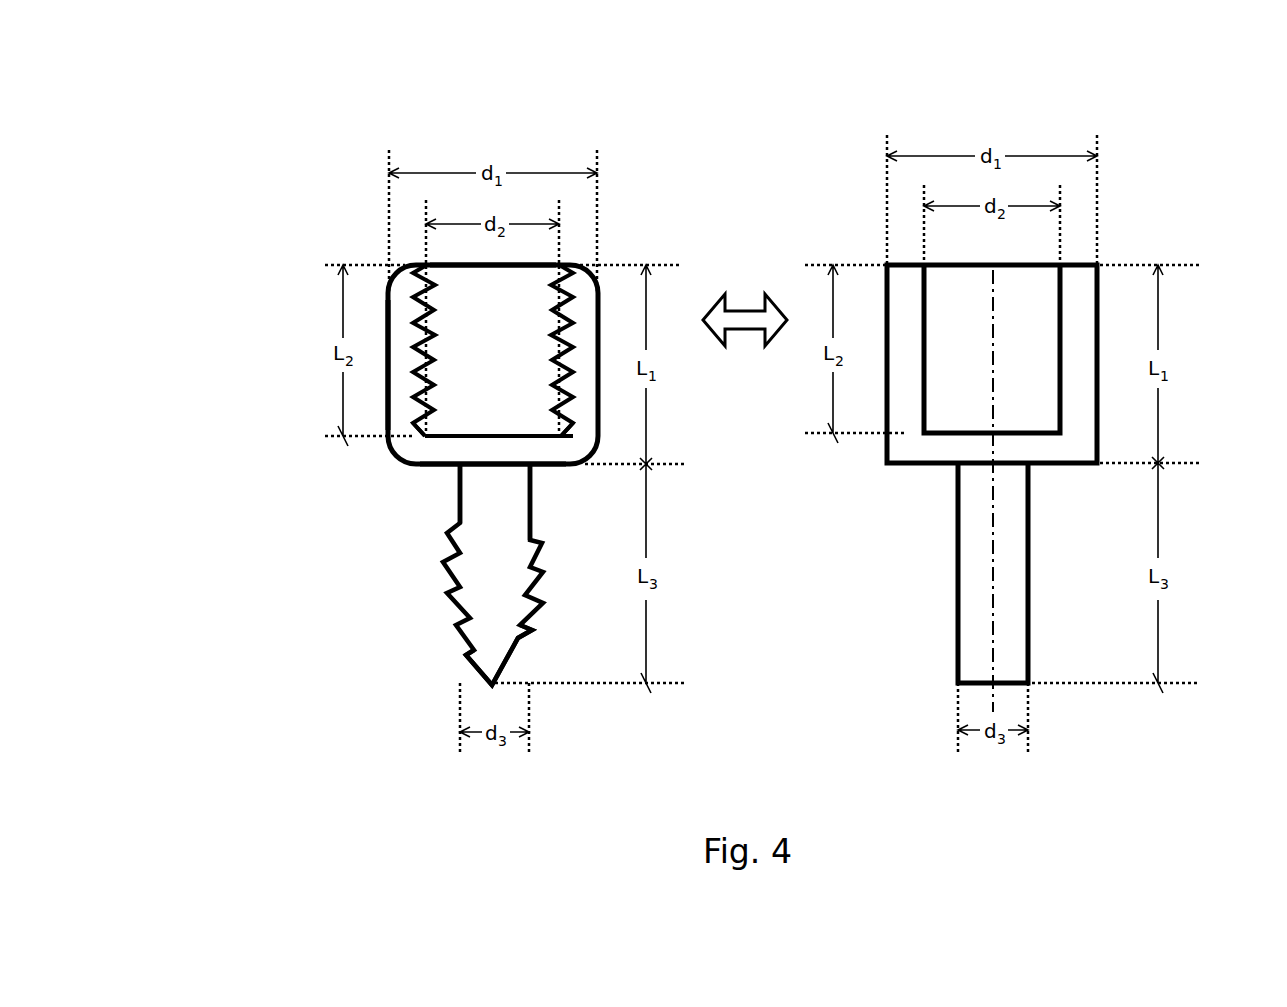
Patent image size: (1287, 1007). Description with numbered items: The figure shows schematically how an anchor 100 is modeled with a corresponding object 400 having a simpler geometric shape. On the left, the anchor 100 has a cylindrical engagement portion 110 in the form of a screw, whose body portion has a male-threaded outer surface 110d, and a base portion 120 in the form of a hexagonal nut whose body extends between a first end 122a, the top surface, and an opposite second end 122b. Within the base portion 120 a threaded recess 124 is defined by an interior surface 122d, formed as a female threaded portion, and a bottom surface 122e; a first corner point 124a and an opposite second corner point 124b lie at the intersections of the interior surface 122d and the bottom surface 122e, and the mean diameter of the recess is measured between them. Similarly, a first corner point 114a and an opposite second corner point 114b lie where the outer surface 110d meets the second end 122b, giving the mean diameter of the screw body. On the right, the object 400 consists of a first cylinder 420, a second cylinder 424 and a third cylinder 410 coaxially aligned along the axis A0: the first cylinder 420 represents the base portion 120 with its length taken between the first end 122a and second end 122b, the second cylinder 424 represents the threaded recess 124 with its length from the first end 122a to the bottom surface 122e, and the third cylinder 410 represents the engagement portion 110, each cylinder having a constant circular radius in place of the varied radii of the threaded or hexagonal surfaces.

The anchor 100 is at (580, 91).
The cylindrical engagement portion 110 is at (448, 573).
The outer surface 110d is at (530, 518).
The first corner point 114a is at (458, 466).
The second corner point 114b is at (532, 467).
The base portion 120 is at (388, 402).
The first end 122a is at (571, 268).
The second end 122b is at (566, 460).
The interior surface 122d is at (436, 312).
The bottom surface 122e is at (520, 434).
The threaded recess 124 is at (505, 295).
The first corner point 124a is at (420, 437).
The second corner point 124b is at (535, 466).
The object 400 is at (1052, 79).
The third cylinder 410 is at (958, 592).
The first cylinder 420 is at (887, 407).
The second cylinder 424 is at (1020, 297).
The central axis A0 is at (993, 233).